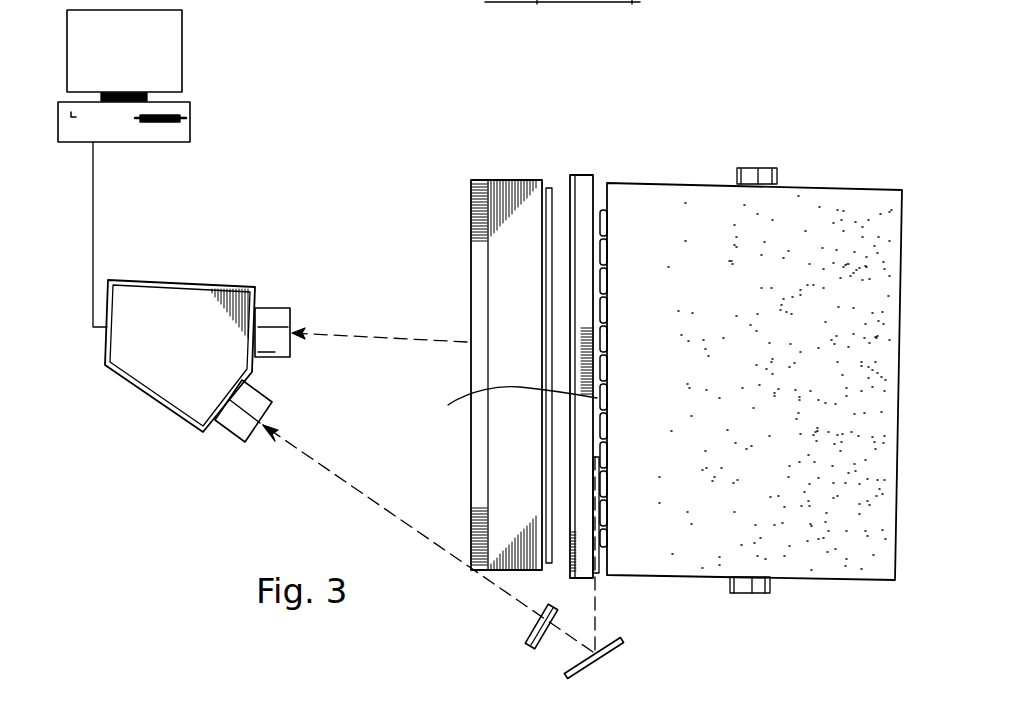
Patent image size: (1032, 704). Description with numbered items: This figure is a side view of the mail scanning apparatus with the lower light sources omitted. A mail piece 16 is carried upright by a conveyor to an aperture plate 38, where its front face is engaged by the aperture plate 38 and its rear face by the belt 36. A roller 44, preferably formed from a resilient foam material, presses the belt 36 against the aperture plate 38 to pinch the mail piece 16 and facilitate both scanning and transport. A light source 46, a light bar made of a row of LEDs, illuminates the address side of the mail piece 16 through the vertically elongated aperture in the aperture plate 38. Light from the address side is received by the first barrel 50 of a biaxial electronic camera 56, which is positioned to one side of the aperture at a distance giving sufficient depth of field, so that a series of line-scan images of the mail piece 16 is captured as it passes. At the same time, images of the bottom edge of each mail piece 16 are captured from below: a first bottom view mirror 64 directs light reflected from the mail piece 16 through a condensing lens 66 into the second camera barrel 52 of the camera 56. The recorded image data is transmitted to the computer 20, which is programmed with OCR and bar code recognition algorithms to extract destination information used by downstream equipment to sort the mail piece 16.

The computer 20 is at (133, 133).
The biaxial electronic camera 56 is at (170, 293).
The first barrel 50 is at (277, 315).
The second camera barrel 52 is at (235, 420).
The light source 46 is at (527, 207).
The aperture plate 38 is at (583, 180).
The mail piece 16 is at (508, 403).
The belt 36 is at (612, 213).
The roller 44 is at (832, 200).
The first bottom view mirror 64 is at (613, 650).
The condensing lens 66 is at (525, 633).